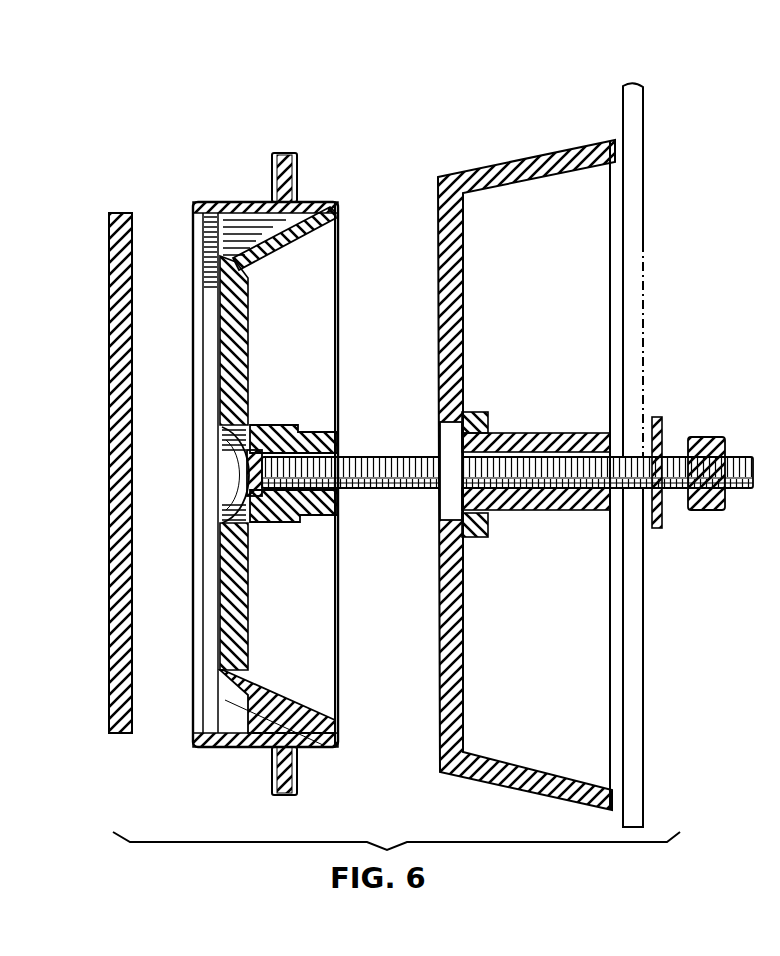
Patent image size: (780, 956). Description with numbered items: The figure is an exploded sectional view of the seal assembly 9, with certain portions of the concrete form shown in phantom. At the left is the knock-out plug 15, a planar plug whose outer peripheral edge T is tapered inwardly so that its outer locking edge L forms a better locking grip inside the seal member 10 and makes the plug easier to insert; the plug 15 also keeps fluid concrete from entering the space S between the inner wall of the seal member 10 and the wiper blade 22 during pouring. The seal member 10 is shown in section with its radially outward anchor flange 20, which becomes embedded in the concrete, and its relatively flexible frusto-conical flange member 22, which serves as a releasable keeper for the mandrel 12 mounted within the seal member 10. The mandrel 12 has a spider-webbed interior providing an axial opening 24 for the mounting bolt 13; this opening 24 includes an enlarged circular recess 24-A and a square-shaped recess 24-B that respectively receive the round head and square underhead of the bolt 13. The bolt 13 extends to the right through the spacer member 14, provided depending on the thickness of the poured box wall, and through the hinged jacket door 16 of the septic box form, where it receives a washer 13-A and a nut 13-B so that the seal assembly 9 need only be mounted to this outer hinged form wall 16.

The seal assembly 9 is at (591, 83).
The seal member 10 is at (320, 753).
The mandrel 12 is at (338, 247).
The mounting bolt 13 is at (410, 489).
The washer 13-A is at (658, 417).
The nut 13-B is at (719, 437).
The spacer member 14 is at (527, 183).
The knock-out plug 15 is at (123, 213).
The hinged jacket door 16 is at (647, 170).
The anchor flange 20 is at (272, 167).
The flange member 22 is at (287, 228).
The axial opening 24 is at (335, 467).
The enlarged circular recess 24-A is at (218, 437).
The square-shaped recess 24-B is at (255, 457).
The outer locking edge L is at (112, 736).
The tapered edge T is at (125, 738).
The space S is at (253, 720).